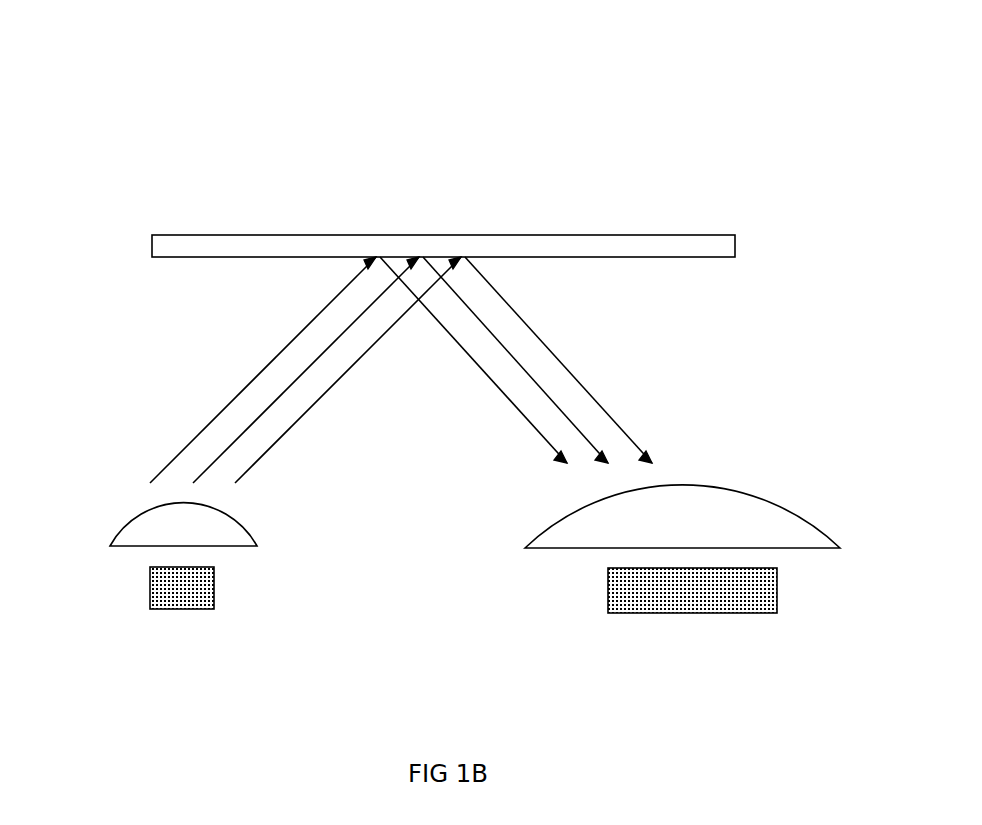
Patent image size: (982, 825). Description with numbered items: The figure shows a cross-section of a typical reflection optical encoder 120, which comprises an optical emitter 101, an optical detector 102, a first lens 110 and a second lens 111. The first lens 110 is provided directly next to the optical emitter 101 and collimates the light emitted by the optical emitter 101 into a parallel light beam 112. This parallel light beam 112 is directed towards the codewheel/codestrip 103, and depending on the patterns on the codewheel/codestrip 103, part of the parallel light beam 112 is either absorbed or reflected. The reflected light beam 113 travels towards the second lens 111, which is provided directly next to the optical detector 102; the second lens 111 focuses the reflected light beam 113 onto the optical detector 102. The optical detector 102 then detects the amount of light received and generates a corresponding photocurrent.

The reflection optical encoder 120 is at (713, 163).
The codewheel/codestrip 103 is at (277, 245).
The parallel light beam 112 is at (275, 368).
The reflected light beam 113 is at (568, 372).
The first lens 110 is at (152, 535).
The second lens 111 is at (735, 517).
The optical emitter 101 is at (173, 597).
The optical detector 102 is at (692, 598).